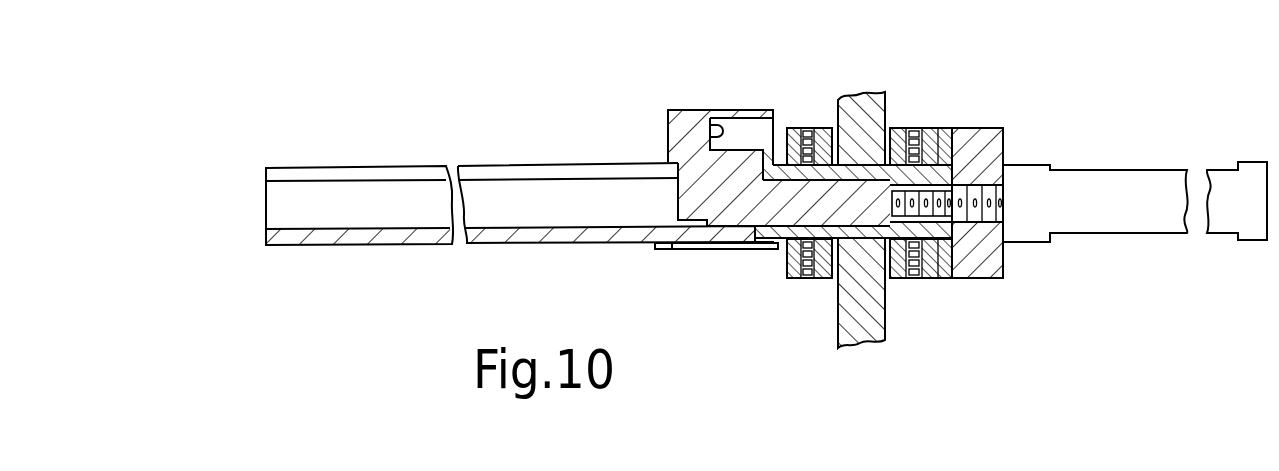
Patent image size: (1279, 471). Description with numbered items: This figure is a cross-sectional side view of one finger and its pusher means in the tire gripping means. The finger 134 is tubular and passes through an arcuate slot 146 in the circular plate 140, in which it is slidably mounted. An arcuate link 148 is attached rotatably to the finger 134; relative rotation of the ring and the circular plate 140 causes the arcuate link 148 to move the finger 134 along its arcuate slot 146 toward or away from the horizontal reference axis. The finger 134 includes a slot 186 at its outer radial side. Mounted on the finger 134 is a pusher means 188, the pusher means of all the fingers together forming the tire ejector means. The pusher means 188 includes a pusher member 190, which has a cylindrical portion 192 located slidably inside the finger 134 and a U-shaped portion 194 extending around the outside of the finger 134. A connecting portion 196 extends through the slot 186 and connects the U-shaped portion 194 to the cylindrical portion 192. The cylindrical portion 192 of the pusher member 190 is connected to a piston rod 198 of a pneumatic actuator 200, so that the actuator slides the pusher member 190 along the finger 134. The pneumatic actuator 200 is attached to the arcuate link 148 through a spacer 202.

The finger 134 is at (342, 246).
The slot 186 is at (323, 167).
The pusher member 190 is at (668, 137).
The connecting portion 196 is at (717, 117).
The cylindrical portion 192 is at (768, 212).
The U-shaped portion 194 is at (662, 251).
The pusher means 188 is at (1117, 50).
The arcuate link 148 is at (790, 127).
The circular plate 140 is at (887, 322).
The arcuate slot 146 is at (840, 278).
The piston rod 198 is at (945, 185).
The spacer 202 is at (943, 280).
The pneumatic actuator 200 is at (1123, 235).